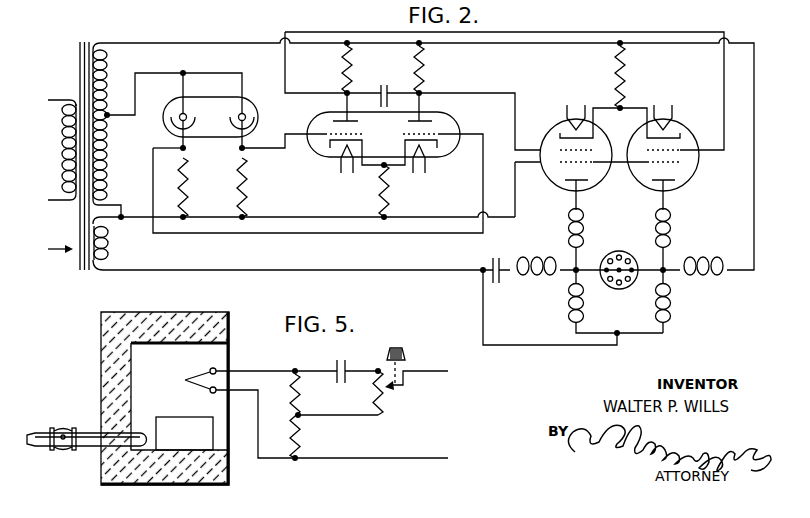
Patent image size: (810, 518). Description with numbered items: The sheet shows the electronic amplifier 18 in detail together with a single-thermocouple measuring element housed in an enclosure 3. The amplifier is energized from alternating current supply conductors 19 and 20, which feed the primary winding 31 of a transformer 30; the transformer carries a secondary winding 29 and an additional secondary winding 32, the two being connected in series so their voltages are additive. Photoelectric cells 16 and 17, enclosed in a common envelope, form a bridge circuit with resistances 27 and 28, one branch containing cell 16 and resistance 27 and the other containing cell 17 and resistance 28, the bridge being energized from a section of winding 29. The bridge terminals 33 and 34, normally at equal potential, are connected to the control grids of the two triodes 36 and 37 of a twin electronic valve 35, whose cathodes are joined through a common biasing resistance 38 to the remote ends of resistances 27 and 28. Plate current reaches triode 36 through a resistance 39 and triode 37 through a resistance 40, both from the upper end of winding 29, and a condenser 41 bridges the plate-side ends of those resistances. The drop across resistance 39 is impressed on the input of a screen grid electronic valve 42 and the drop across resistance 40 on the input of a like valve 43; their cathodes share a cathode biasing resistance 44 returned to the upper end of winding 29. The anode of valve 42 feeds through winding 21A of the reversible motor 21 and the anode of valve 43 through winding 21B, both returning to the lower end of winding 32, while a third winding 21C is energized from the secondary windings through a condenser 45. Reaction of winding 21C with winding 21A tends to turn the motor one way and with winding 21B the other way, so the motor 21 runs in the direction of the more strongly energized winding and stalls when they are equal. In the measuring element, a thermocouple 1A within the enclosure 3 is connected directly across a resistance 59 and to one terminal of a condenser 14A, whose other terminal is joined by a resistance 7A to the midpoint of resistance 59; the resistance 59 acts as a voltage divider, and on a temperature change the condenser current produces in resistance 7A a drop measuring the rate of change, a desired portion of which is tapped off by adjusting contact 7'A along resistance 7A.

In FIG. 2, the transformer 30 is at (92, 38).
In FIG. 2, the secondary winding 29 is at (108, 78).
In FIG. 2, the primary winding 31 is at (62, 150).
In FIG. 2, the alternating current supply conductor 19 is at (54, 98).
In FIG. 2, the alternating current supply conductor 20 is at (55, 198).
In FIG. 2, the electronic amplifier 18 is at (50, 250).
In FIG. 2, the additional secondary winding 32 is at (110, 247).
In FIG. 2, the photoelectric cell 16 is at (169, 113).
In FIG. 2, the photoelectric cell 17 is at (253, 113).
In FIG. 2, the bridge terminal 34 is at (186, 147).
In FIG. 2, the bridge terminal 33 is at (240, 142).
In FIG. 2, the resistance 27 is at (187, 185).
In FIG. 2, the resistance 28 is at (247, 185).
In FIG. 2, the electronic valve 35 is at (322, 145).
In FIG. 2, the triode 36 is at (323, 122).
In FIG. 2, the triode 37 is at (443, 128).
In FIG. 2, the biasing resistance 38 is at (392, 184).
In FIG. 2, the resistance 39 is at (341, 66).
In FIG. 2, the resistance 40 is at (426, 72).
In FIG. 2, the condenser 41 is at (385, 82).
In FIG. 2, the cathode biasing resistance 44 is at (628, 82).
In FIG. 2, the electronic valve 43 is at (560, 125).
In FIG. 2, the electronic valve 42 is at (688, 180).
In FIG. 2, the motor winding 21B is at (580, 224).
In FIG. 2, the motor winding 21A is at (659, 224).
In FIG. 2, the reversible motor 21 is at (619, 245).
In FIG. 2, the motor winding 21C is at (698, 283).
In FIG. 2, the condenser 45 is at (497, 260).
In FIG. 5, the furnace 3 is at (167, 311).
In FIG. 5, the thermocouple 1A is at (202, 386).
In FIG. 5, the condenser 14A is at (343, 367).
In FIG. 5, the contact 7'A is at (418, 359).
In FIG. 5, the resistance 7A is at (388, 392).
In FIG. 5, the resistance 59 is at (293, 427).